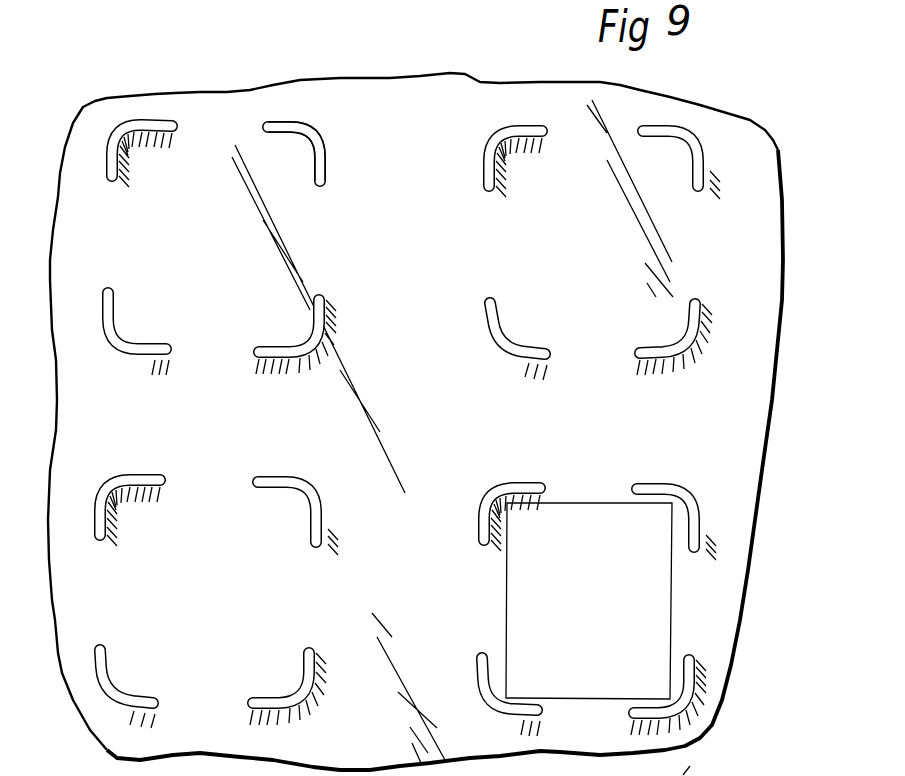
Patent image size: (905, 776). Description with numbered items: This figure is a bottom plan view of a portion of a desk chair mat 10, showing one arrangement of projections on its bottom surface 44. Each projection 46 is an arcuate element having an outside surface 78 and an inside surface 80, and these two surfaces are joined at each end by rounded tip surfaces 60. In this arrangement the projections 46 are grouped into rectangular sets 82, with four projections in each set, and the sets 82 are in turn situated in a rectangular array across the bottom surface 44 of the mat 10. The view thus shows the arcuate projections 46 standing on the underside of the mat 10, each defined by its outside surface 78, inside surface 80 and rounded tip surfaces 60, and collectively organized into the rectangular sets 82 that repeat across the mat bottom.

The desk chair mat 10 is at (700, 91).
The bottom surface 44 is at (437, 424).
The projection 46 is at (326, 303).
The rounded tip surface 60 is at (258, 128).
The outside surface 78 is at (323, 142).
The inside surface 80 is at (307, 157).
The rectangular set 82 is at (507, 605).